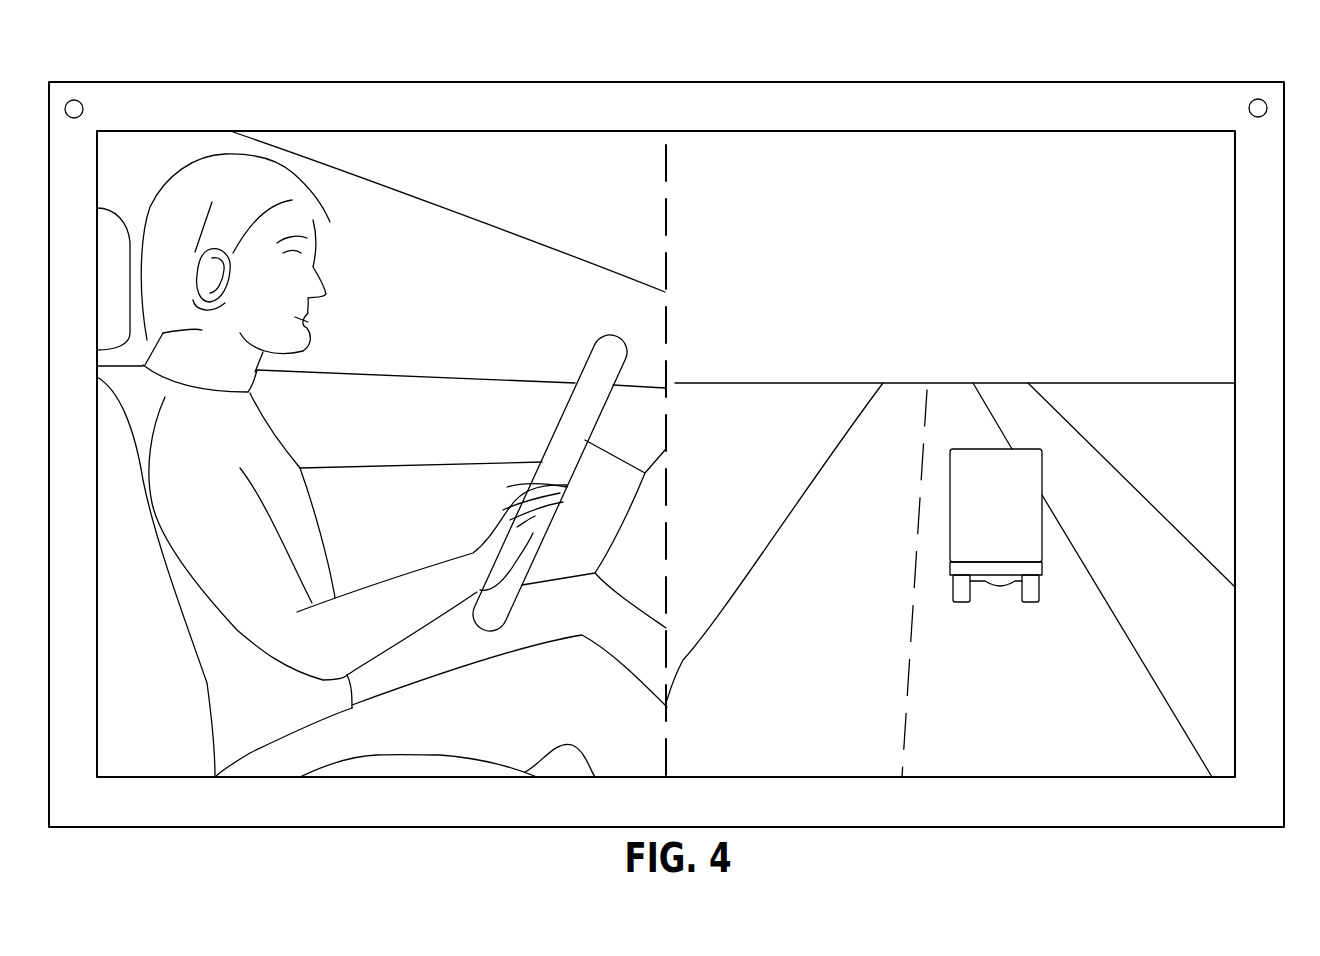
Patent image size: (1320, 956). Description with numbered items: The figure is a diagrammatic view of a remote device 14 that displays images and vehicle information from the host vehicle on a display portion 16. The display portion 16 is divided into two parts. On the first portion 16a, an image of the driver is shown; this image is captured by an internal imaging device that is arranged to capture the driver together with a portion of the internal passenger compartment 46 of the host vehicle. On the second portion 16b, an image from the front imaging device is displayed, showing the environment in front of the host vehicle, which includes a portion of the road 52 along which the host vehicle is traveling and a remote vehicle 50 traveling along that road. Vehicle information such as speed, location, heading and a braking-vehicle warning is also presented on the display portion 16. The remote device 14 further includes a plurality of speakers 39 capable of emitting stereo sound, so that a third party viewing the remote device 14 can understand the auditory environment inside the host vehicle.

The remote device 14 is at (1224, 76).
The speakers 39 is at (80, 101).
The display portion 16 is at (752, 181).
The first portion 16a is at (482, 167).
The second portion 16b is at (955, 167).
The internal passenger compartment 46 is at (542, 274).
The road 52 is at (863, 470).
The remote vehicle 50 is at (1042, 472).